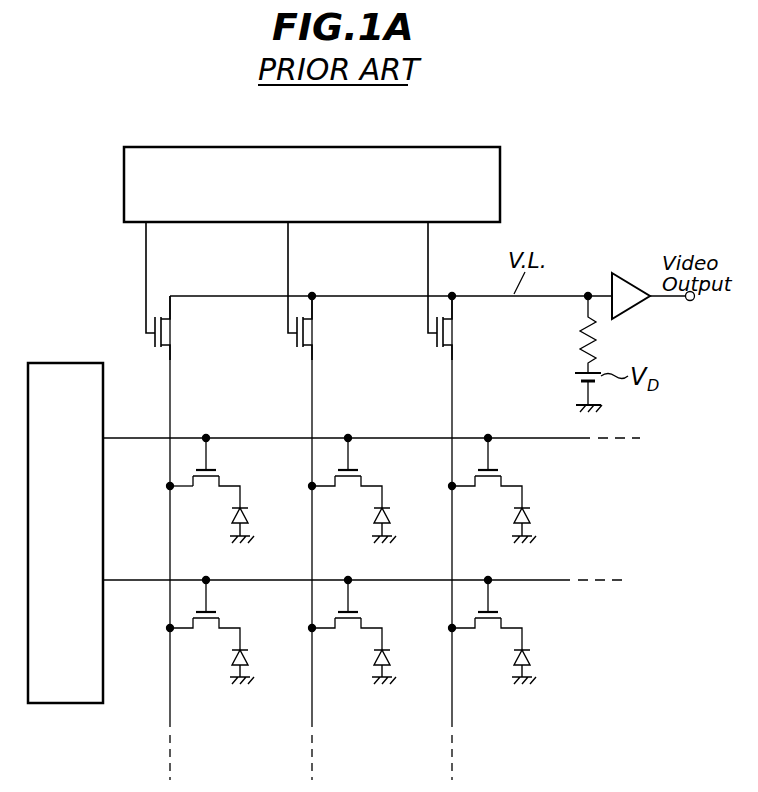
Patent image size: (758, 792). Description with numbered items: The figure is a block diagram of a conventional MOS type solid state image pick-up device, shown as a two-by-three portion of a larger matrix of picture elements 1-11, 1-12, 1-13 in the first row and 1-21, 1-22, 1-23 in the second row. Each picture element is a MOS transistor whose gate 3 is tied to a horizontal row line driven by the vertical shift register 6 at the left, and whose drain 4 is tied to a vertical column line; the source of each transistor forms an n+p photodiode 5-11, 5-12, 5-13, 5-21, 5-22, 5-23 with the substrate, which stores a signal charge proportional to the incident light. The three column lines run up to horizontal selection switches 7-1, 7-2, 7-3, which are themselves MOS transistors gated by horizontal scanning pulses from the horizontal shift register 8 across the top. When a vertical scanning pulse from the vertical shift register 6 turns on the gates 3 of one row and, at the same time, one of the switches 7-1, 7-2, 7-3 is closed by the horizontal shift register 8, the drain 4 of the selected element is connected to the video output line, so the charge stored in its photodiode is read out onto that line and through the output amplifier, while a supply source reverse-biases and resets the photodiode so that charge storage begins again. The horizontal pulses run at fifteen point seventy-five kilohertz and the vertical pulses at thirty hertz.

The horizontal shift register 8 is at (358, 156).
The vertical shift register 6 is at (62, 362).
The horizontal selection switch 7-1 is at (166, 339).
The horizontal selection switch 7-2 is at (308, 339).
The horizontal selection switch 7-3 is at (448, 339).
The gate 3 is at (208, 470).
The drain 4 is at (185, 489).
The picture element 1-11 is at (220, 476).
The picture element 1-12 is at (362, 476).
The picture element 1-13 is at (502, 476).
The picture element 1-21 is at (220, 618).
The picture element 1-22 is at (362, 618).
The picture element 1-23 is at (504, 618).
The photodiode 5-11 is at (248, 518).
The photodiode 5-12 is at (390, 518).
The photodiode 5-13 is at (530, 518).
The photodiode 5-21 is at (248, 660).
The photodiode 5-22 is at (390, 660).
The photodiode 5-23 is at (530, 660).